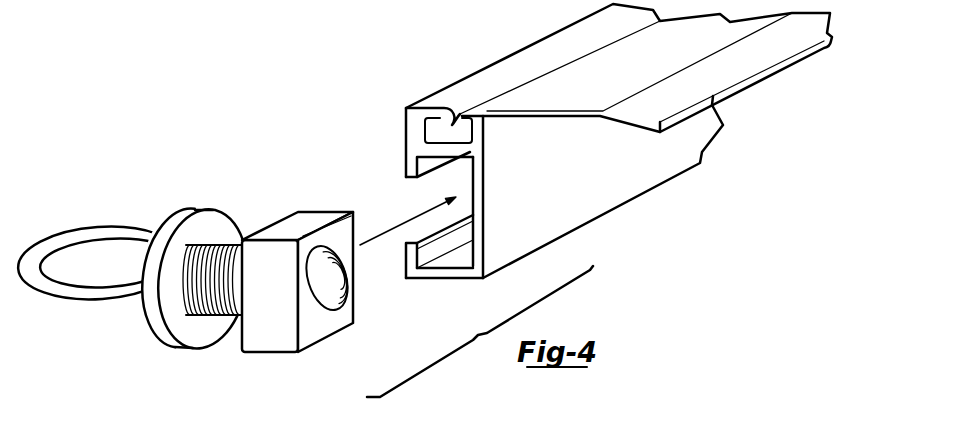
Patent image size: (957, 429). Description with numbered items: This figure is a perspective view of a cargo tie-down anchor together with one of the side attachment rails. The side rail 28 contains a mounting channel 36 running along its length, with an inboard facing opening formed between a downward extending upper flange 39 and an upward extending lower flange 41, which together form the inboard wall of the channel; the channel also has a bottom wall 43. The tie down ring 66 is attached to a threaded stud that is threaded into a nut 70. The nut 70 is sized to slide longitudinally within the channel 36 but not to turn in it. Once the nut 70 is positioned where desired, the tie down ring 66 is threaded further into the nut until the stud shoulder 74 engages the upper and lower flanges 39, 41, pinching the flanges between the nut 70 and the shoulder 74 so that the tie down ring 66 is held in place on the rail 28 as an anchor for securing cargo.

The side rail 28 is at (618, 210).
The channel 36 is at (420, 195).
The upper flange 39 is at (407, 166).
The lower flange 41 is at (405, 265).
The bottom wall 43 is at (431, 279).
The tie down ring 66 is at (85, 237).
The nut 70 is at (315, 220).
The stud shoulder 74 is at (217, 222).